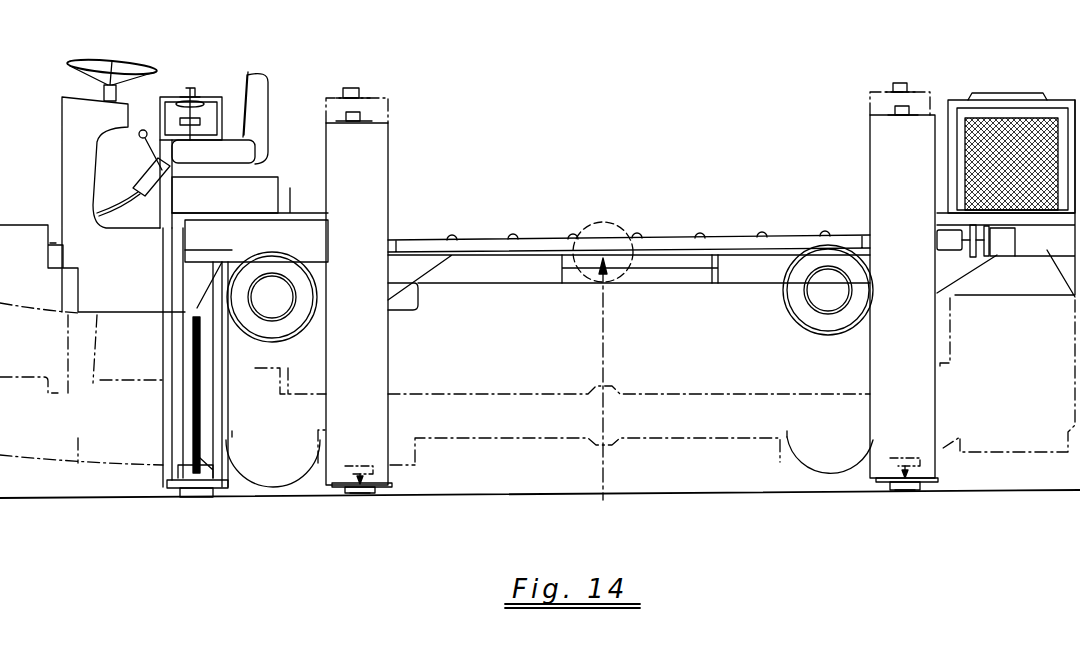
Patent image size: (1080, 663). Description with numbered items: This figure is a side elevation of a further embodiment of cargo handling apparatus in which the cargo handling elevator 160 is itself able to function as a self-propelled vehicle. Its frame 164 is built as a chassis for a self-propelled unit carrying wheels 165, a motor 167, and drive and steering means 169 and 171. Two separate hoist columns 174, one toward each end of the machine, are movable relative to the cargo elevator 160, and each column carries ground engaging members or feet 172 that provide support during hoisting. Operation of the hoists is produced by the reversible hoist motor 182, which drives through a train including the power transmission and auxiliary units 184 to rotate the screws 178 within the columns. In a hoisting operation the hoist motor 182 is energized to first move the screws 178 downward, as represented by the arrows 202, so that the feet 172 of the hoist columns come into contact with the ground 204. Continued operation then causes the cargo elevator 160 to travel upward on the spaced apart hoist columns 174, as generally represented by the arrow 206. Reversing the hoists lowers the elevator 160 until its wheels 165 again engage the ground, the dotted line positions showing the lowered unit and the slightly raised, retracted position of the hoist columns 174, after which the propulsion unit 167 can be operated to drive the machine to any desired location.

The cargo handling elevator 160 is at (544, 231).
The frame 164 is at (525, 283).
The wheels 165 is at (268, 333).
The motor 167 is at (1030, 120).
The drive means 169 is at (134, 186).
The steering means 171 is at (132, 65).
The ground engaging members or feet 172 is at (355, 498).
The hoist columns 174 is at (390, 108).
The screws 178 is at (192, 414).
The reversible hoist motor 182 is at (1005, 252).
The power transmission and auxiliary units 184 is at (950, 250).
The arrows 202 is at (365, 476).
The ground 204 is at (692, 490).
The arrow 206 is at (605, 334).